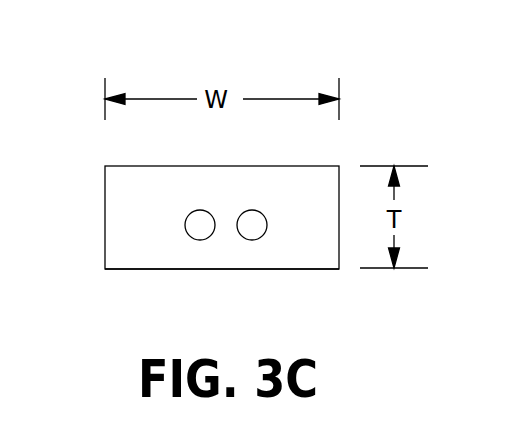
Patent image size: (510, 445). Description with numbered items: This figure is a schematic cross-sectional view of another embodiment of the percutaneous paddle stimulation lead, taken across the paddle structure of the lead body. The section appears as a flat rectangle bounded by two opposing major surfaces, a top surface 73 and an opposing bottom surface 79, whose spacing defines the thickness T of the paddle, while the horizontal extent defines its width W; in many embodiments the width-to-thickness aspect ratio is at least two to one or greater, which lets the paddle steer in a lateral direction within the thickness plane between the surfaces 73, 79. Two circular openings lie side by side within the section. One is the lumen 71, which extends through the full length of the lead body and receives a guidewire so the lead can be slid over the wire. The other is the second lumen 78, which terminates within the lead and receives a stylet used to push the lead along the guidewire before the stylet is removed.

The lumen 71 is at (250, 240).
The major surface 73 is at (124, 166).
The second lumen 78 is at (195, 211).
The major surface 79 is at (138, 270).